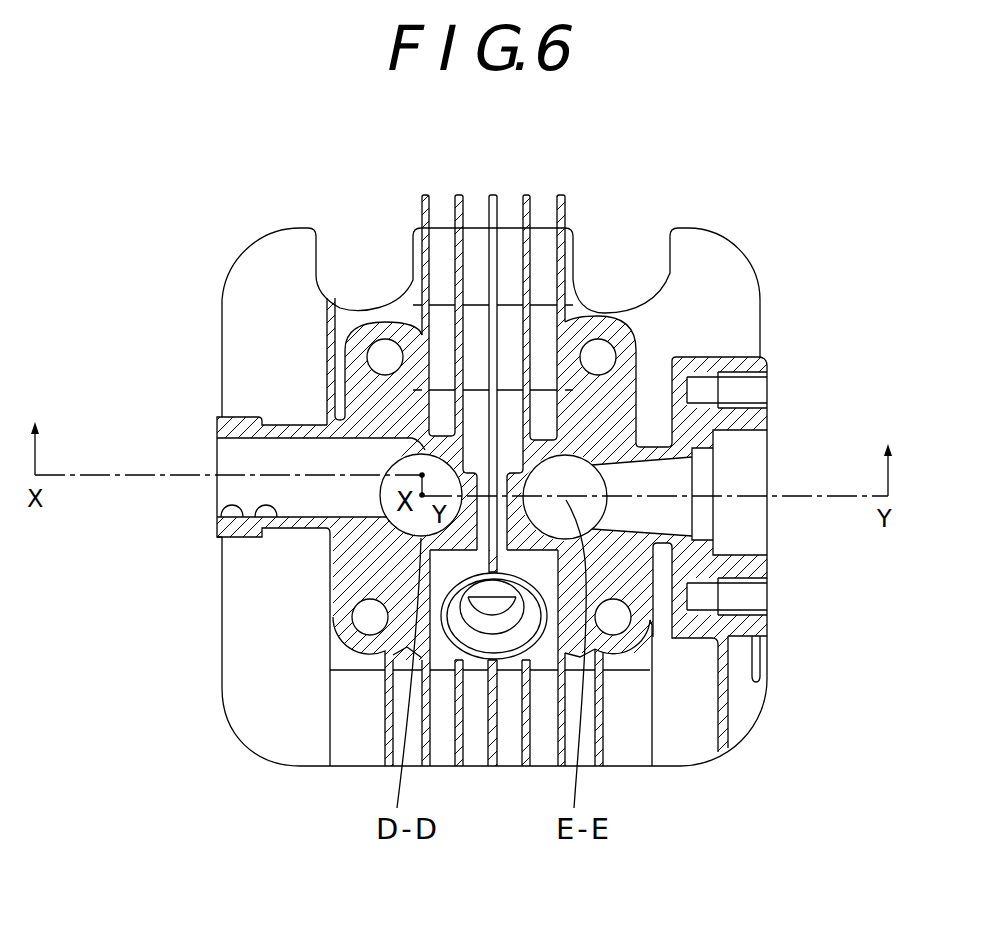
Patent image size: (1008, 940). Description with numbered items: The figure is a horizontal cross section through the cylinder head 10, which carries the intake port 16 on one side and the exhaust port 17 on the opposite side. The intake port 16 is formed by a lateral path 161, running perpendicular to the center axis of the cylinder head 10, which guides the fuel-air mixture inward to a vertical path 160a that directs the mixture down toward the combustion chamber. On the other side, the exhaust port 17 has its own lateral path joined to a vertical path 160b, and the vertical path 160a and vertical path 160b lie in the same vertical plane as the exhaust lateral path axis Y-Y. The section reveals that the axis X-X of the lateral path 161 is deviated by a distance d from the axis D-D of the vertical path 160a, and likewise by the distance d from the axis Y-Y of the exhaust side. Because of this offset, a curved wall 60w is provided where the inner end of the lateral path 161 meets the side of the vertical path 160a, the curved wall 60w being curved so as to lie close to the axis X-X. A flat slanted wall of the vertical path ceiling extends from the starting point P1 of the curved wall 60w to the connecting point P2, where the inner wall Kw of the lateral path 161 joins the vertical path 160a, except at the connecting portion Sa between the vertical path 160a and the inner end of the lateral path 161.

The cylinder head 10 is at (704, 209).
The intake port 16 is at (261, 565).
The exhaust port 17 is at (677, 473).
The curved wall 60w is at (421, 446).
The starting point of the curved wall P1 is at (421, 472).
The connecting point P2 is at (420, 497).
The distance d is at (423, 474).
The vertical path 160a is at (418, 537).
The vertical path 160b is at (574, 458).
The connecting portion Sa is at (380, 500).
The lateral path 161 is at (263, 506).
The inner wall Kw is at (243, 538).